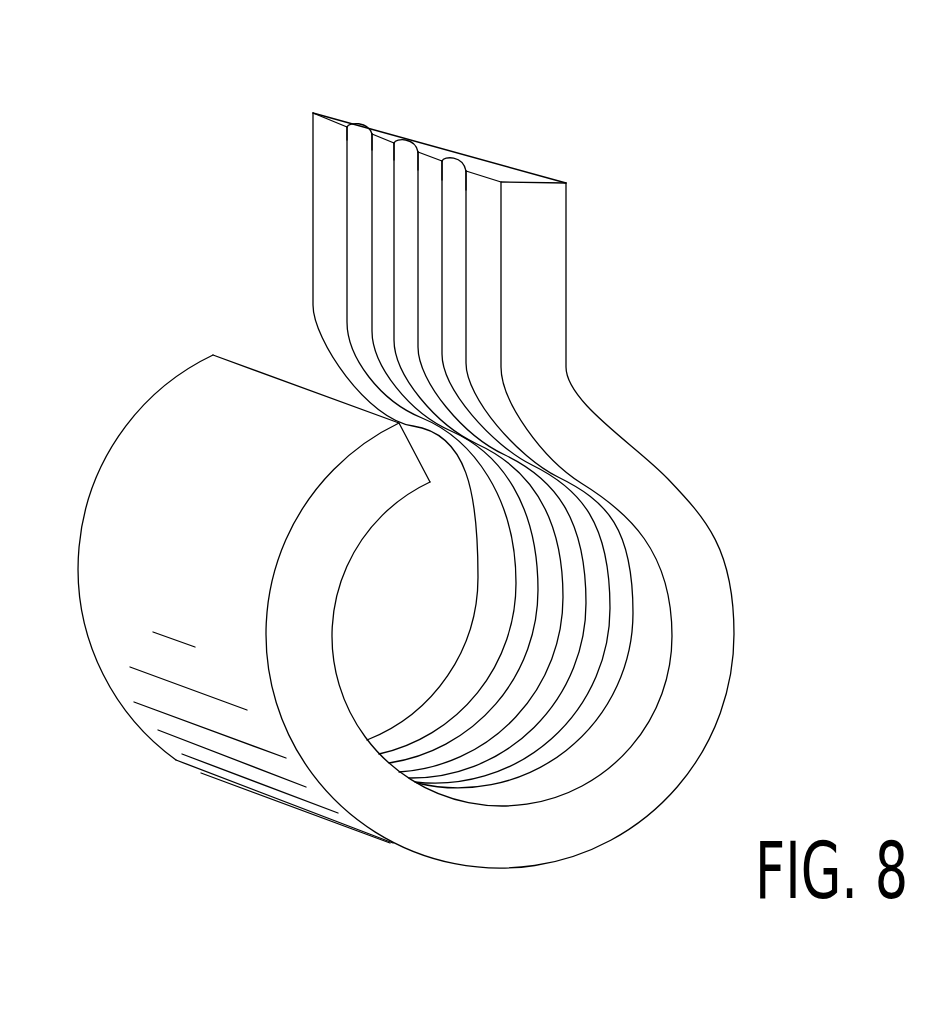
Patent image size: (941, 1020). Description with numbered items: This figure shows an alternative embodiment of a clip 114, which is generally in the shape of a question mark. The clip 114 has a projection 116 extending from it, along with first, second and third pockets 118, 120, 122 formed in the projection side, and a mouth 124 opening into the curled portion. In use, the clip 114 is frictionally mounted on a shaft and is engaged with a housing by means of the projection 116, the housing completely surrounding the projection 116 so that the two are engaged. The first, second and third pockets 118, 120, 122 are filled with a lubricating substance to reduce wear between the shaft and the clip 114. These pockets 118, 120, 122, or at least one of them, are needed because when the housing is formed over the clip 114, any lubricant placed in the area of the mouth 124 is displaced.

The clip 114 is at (749, 726).
The projection 116 is at (582, 279).
The first pocket 118 is at (358, 142).
The second pocket 120 is at (407, 160).
The third pocket 122 is at (453, 177).
The mouth 124 is at (286, 344).